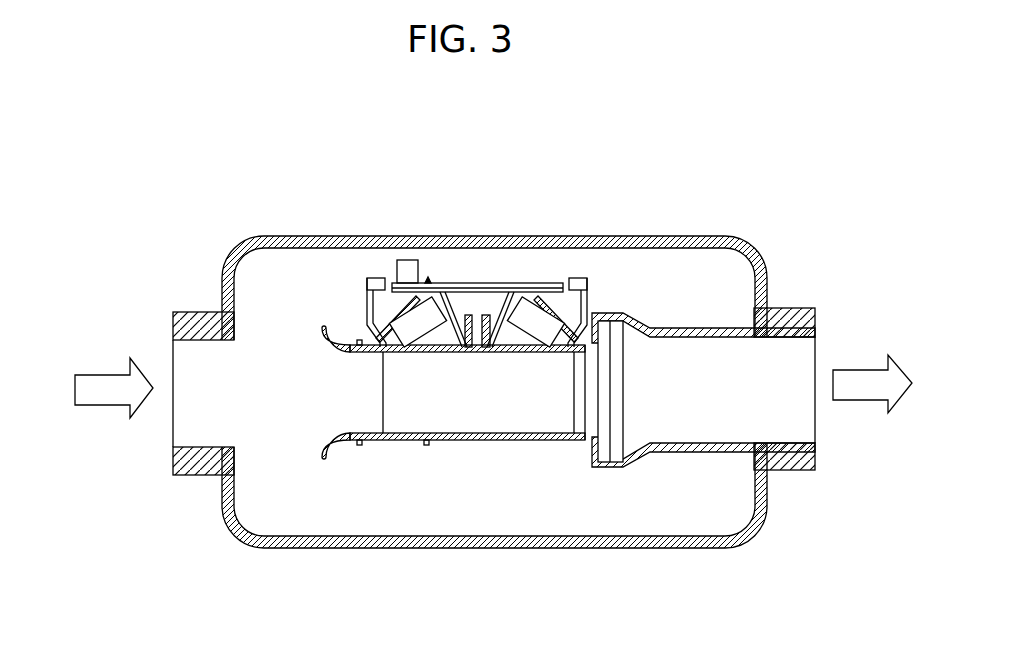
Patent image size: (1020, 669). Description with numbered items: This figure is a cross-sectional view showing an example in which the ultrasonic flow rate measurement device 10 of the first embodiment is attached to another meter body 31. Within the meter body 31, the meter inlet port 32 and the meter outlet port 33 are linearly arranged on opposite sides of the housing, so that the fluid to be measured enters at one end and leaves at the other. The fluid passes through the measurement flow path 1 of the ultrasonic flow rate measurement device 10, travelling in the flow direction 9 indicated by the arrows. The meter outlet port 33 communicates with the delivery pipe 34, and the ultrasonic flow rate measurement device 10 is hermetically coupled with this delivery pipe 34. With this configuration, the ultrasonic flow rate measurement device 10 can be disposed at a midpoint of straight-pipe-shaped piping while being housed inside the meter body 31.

The measurement flow path 1 is at (463, 407).
The flow direction 9 is at (98, 387).
The ultrasonic flow rate measurement device 10 is at (485, 288).
The meter body 31 is at (597, 547).
The meter inlet port 32 is at (185, 478).
The meter outlet port 33 is at (790, 471).
The delivery pipe 34 is at (697, 452).